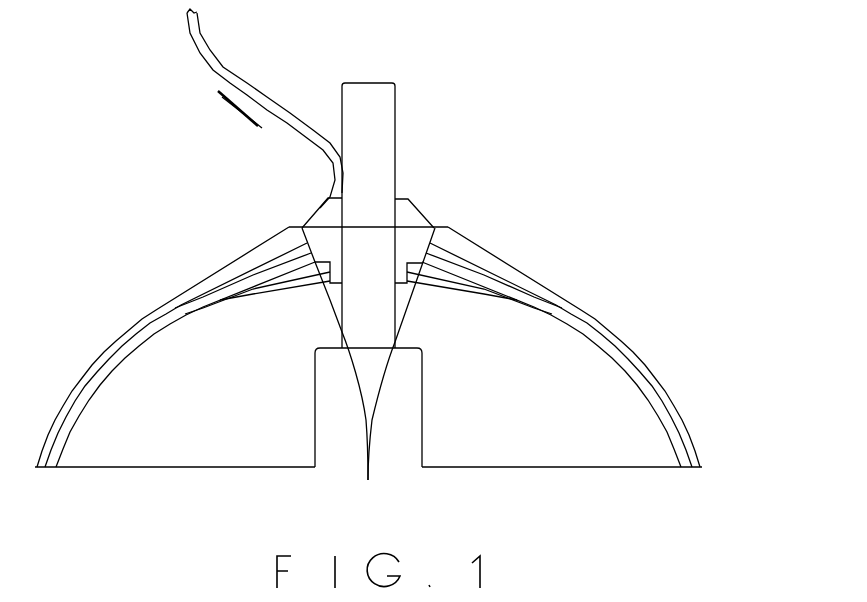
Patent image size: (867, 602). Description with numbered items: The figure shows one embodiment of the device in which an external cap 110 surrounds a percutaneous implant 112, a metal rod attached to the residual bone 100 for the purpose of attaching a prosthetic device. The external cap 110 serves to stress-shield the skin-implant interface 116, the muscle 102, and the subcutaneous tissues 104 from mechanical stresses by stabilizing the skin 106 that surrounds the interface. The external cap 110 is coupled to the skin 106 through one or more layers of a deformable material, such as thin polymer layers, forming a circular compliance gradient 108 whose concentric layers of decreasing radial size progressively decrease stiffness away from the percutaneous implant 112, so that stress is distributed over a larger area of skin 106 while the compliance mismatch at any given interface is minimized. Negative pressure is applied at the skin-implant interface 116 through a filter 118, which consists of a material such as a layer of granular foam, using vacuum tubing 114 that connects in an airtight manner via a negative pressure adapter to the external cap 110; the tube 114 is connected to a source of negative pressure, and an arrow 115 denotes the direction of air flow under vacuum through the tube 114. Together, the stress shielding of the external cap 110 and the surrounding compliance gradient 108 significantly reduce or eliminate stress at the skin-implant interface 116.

The residual bone 100 is at (395, 418).
The muscle 102 is at (628, 430).
The subcutaneous tissues 104 is at (640, 365).
The skin 106 is at (553, 300).
The compliance gradient 108 is at (503, 255).
The external cap 110 is at (421, 210).
The percutaneous implant 112 is at (396, 137).
The vacuum tubing 114 is at (262, 92).
The arrow 115 is at (238, 110).
The skin-implant interface 116 is at (368, 375).
The filter 118 is at (428, 236).